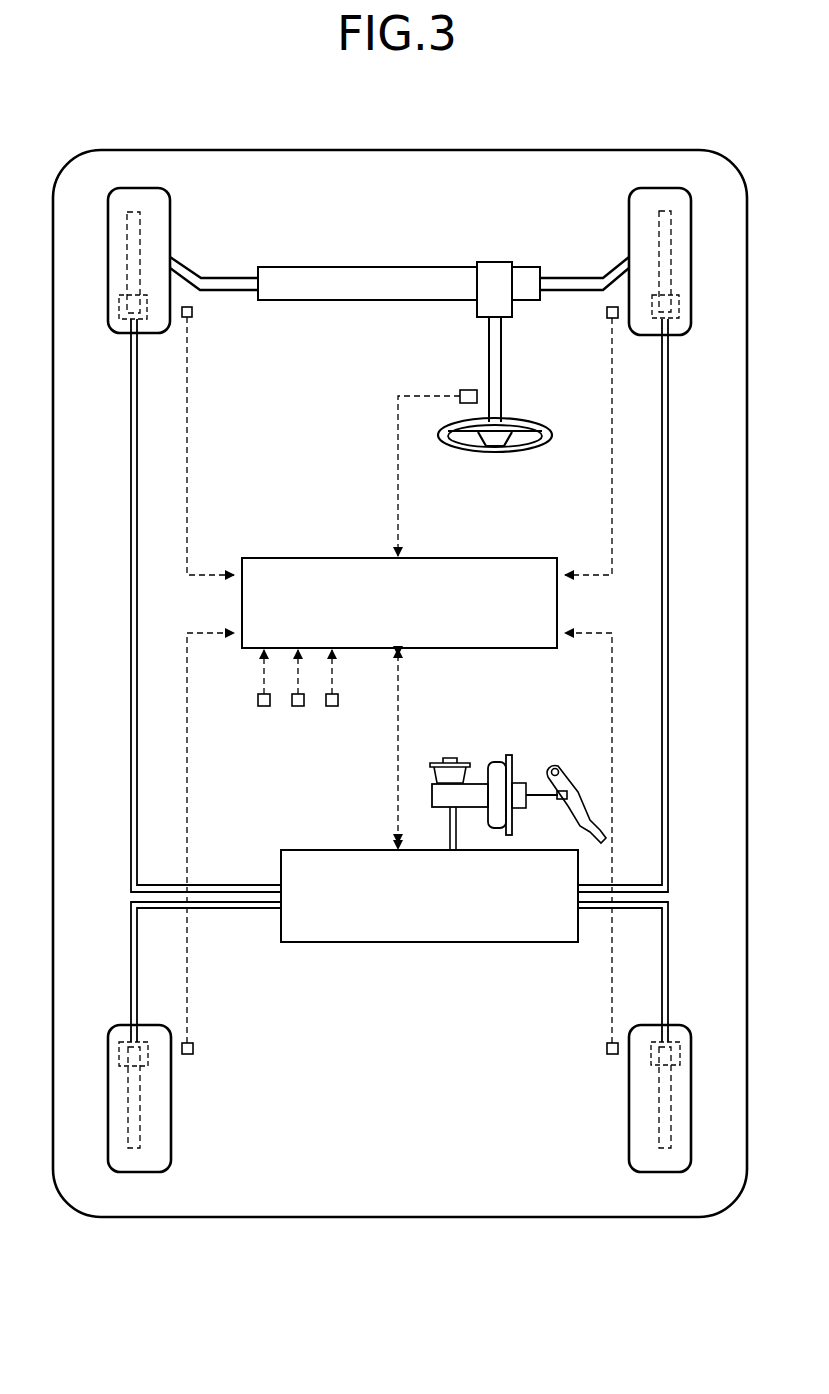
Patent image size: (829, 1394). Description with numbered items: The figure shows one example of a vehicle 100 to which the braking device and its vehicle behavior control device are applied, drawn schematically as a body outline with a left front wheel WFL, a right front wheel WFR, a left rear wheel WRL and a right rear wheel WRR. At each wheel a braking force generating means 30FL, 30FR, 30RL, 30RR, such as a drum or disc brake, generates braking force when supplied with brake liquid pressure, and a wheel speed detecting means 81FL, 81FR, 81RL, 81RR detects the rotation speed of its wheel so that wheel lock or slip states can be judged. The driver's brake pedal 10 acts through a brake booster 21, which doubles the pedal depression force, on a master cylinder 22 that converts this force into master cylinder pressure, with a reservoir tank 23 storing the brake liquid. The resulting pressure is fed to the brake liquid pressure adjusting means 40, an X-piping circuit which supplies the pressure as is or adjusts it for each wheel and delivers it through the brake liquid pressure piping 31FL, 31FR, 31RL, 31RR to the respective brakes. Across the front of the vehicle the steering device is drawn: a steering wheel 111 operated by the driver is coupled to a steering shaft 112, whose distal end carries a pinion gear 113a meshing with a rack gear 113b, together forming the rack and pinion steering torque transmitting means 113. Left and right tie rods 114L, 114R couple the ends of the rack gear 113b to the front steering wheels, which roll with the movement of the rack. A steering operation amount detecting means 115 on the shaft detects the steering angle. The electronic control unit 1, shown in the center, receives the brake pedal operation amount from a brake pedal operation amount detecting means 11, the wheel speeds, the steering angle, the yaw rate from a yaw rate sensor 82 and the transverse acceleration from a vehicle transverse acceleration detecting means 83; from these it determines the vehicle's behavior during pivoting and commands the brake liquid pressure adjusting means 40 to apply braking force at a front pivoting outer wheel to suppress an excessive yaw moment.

The vehicle 100 is at (594, 150).
The left front wheel WFL is at (171, 228).
The right front wheel WFR is at (629, 228).
The left rear wheel WRL is at (171, 1122).
The right rear wheel WRR is at (629, 1122).
The braking force generating means 30FL is at (119, 305).
The braking force generating means 30FR is at (679, 305).
The braking force generating means 30RL is at (119, 1053).
The braking force generating means 30RR is at (680, 1053).
The brake liquid pressure piping 31FL is at (130, 836).
The brake liquid pressure piping 31FR is at (669, 836).
The brake liquid pressure piping 31RL is at (131, 918).
The brake liquid pressure piping 31RR is at (668, 918).
The wheel speed detecting means 81FL is at (194, 312).
The wheel speed detecting means 81FR is at (605, 312).
The wheel speed detecting means 81RL is at (195, 1048).
The wheel speed detecting means 81RR is at (604, 1050).
The steering torque transmitting means 113 is at (399, 244).
The pinion gear 113a is at (493, 262).
The rack gear 113b is at (391, 266).
The left tie rod 114L is at (200, 274).
The right tie rod 114R is at (598, 275).
The steering operation amount detecting means 115 is at (465, 389).
The steering shaft 112 is at (502, 398).
The steering wheel 111 is at (503, 453).
The electronic control unit 1 is at (455, 558).
The brake pedal operation amount detecting means 11 is at (263, 707).
The yaw rate sensor 82 is at (298, 707).
The vehicle transverse acceleration detecting means 83 is at (333, 707).
The reservoir tank 23 is at (448, 757).
The master cylinder 22 is at (477, 784).
The brake booster 21 is at (507, 757).
The brake pedal 10 is at (590, 814).
The brake liquid pressure adjusting means 40 is at (470, 942).